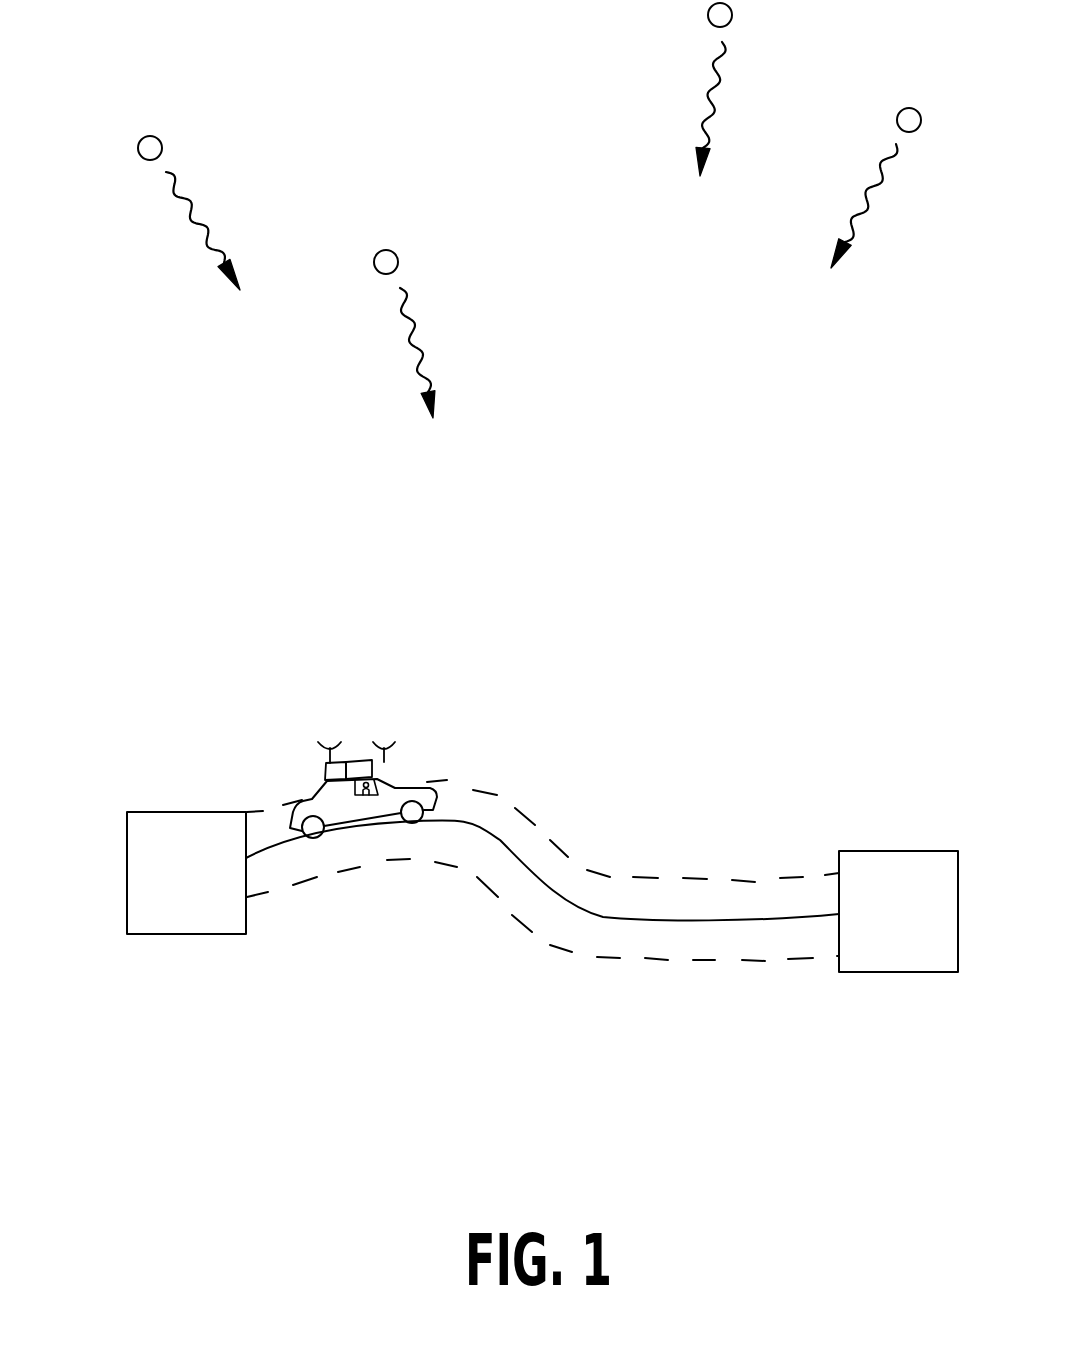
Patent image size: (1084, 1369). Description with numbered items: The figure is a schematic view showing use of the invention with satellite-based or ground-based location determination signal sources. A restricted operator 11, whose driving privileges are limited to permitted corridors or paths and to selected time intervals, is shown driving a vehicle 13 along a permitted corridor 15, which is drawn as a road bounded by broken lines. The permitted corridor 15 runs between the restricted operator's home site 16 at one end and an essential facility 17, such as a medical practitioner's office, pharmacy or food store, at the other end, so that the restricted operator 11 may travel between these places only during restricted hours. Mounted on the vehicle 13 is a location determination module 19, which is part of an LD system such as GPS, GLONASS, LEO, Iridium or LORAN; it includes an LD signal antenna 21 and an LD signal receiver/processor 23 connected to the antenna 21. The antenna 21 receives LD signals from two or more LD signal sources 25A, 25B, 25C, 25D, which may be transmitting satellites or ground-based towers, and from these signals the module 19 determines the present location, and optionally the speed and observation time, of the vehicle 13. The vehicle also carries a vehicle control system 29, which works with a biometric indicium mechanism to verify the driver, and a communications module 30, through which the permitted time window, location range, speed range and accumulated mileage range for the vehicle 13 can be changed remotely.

The restricted operator 11 is at (377, 786).
The vehicle 13 is at (351, 788).
The permitted corridor 15 is at (382, 847).
The home site 16 is at (176, 884).
The essential facility 17 is at (887, 924).
The location determination module 19 is at (300, 778).
The LD signal antenna 21 is at (334, 744).
The LD signal receiver/processor 23 is at (327, 768).
The LD signal source 25A is at (139, 153).
The LD signal source 25B is at (375, 268).
The LD signal source 25C is at (708, 22).
The LD signal source 25D is at (898, 126).
The vehicle control system 29 is at (356, 762).
The communications module 30 is at (358, 770).